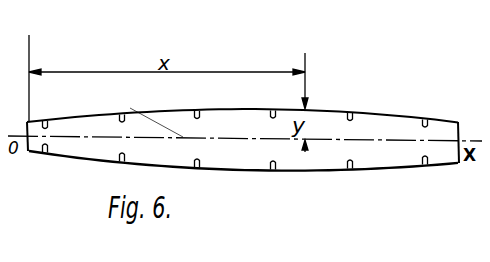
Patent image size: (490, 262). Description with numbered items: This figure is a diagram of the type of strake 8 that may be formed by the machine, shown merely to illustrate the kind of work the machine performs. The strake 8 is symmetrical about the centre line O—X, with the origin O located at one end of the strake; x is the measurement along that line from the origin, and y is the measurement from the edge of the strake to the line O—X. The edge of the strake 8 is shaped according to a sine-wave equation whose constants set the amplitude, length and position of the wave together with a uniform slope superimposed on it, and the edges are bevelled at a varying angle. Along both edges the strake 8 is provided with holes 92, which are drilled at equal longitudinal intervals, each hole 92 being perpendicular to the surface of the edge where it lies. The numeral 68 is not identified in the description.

The strake 8 is at (398, 169).
The holes 92 is at (424, 120).
The sheet numeral fragment 68 is at (13, 254).